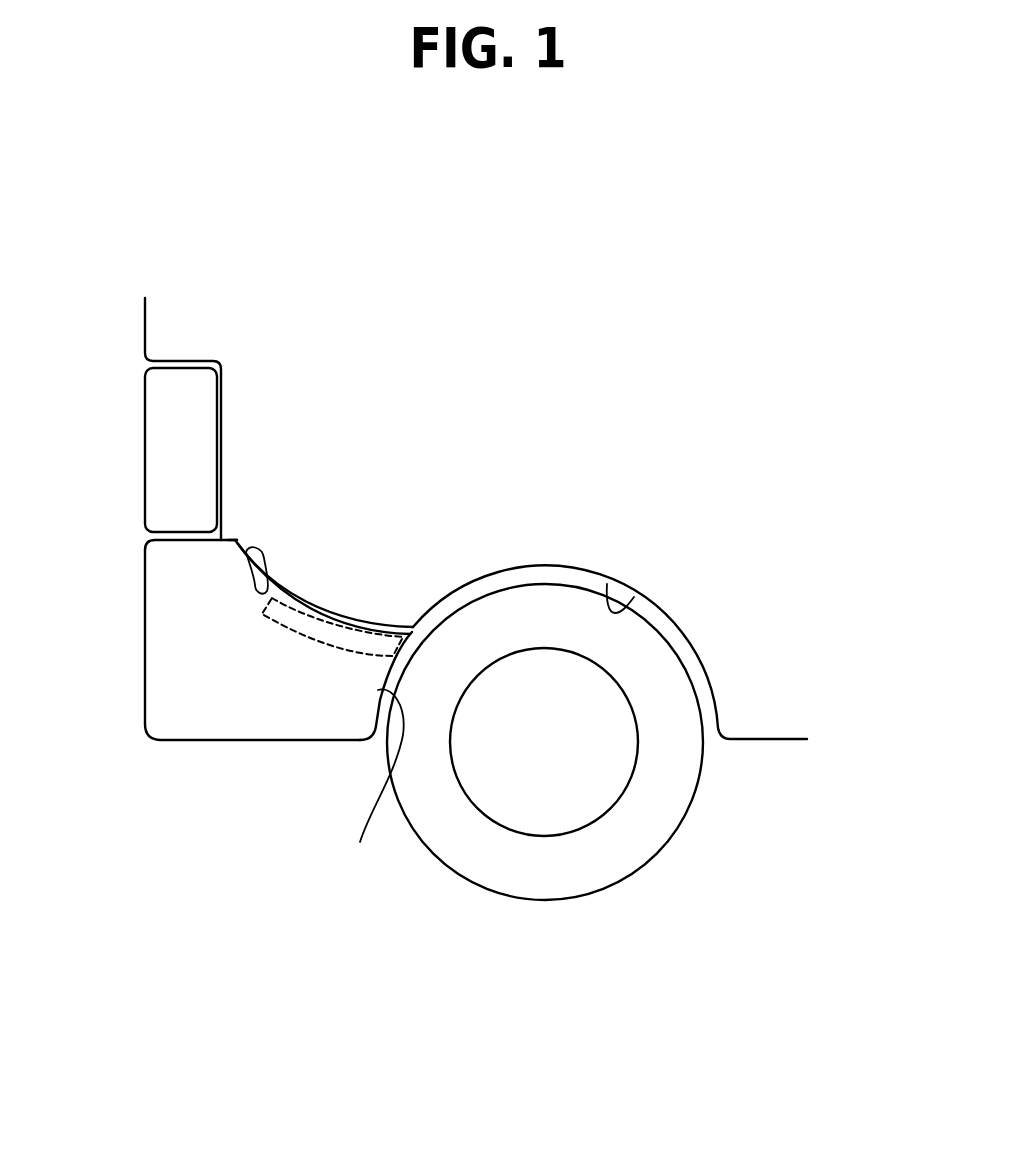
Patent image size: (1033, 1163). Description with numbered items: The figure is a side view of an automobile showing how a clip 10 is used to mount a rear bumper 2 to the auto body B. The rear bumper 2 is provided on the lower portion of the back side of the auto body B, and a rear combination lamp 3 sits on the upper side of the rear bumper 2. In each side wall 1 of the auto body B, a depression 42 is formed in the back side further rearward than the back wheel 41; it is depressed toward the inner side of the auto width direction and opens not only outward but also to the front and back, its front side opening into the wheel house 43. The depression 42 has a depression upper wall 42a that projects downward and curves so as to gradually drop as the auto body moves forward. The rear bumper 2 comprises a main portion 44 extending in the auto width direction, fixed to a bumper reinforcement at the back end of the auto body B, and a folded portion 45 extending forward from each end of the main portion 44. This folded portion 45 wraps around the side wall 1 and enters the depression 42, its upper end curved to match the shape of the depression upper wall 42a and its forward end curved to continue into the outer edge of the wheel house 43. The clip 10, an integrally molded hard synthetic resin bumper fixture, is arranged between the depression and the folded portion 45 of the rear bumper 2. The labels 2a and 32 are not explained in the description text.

The side wall 1 is at (415, 545).
The rear bumper 2 is at (236, 694).
The edge portion of cover 2a is at (240, 543).
The rear combination lamp 3 is at (150, 462).
The clip 10 is at (321, 652).
The protruding portion 32 is at (373, 781).
The back wheel 41 is at (545, 883).
The depression 42 is at (324, 587).
The depression upper wall 42a is at (268, 590).
The wheel house 43 is at (633, 597).
The main portion 44 is at (142, 592).
The folded portion 45 is at (247, 717).
The auto body B is at (528, 331).